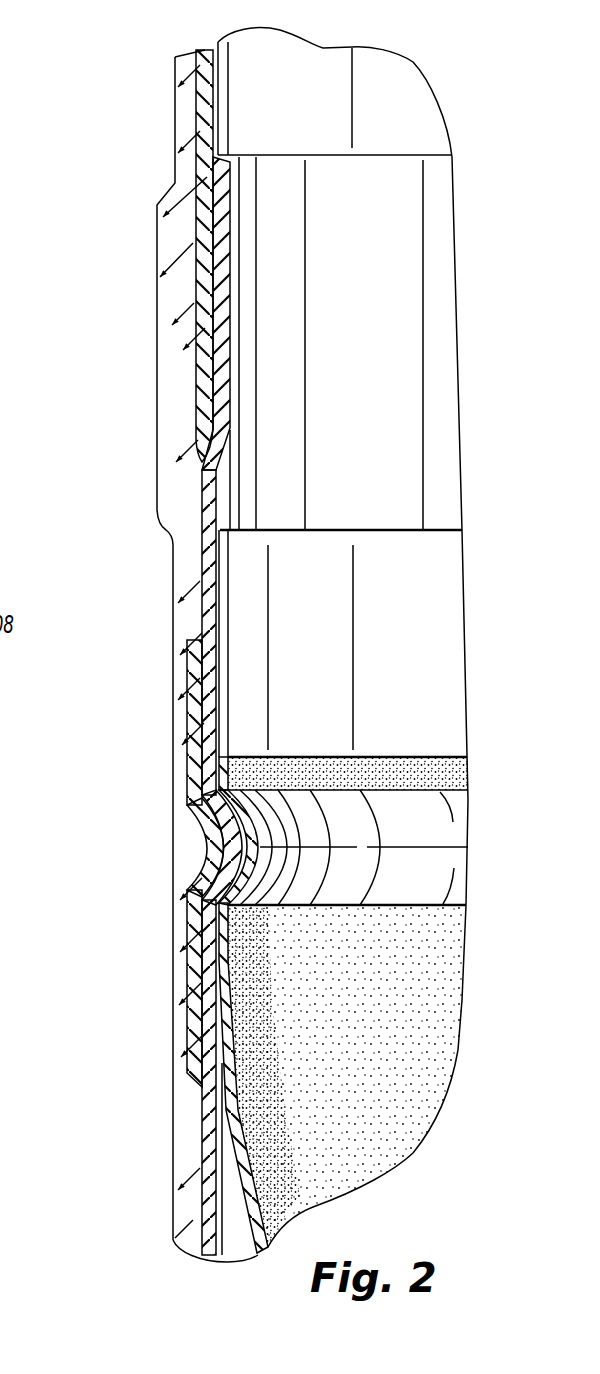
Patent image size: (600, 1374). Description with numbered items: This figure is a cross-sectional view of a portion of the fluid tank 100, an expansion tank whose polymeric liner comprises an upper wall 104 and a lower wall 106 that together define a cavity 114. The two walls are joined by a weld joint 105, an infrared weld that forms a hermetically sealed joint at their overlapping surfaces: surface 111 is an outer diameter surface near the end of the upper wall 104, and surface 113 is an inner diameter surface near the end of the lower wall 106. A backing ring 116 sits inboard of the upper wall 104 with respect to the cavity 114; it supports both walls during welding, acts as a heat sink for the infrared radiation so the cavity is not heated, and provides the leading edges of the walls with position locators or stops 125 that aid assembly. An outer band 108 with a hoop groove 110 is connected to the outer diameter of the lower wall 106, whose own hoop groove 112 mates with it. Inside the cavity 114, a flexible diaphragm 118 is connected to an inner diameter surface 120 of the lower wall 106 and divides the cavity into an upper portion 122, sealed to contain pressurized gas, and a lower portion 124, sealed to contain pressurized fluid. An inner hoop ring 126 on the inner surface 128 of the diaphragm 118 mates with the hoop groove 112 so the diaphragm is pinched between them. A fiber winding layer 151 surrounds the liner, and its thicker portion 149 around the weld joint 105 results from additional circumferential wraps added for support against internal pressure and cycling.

The fluid tank 100 is at (65, 167).
The upper wall 104 is at (207, 110).
The weld joint 105 is at (185, 350).
The lower wall 106 is at (210, 1135).
The outer band 108 is at (190, 712).
The hoop groove 110 is at (207, 860).
The surface 111 is at (200, 392).
The hoop groove 112 is at (266, 808).
The surface 113 is at (230, 400).
The cavity 114 is at (438, 295).
The backing ring 116 is at (308, 152).
The flexible diaphragm 118 is at (367, 1044).
The inner diameter surface 120 is at (400, 636).
The upper portion 122 is at (403, 83).
The lower portion 124 is at (232, 1214).
The position locators or stops 125 is at (213, 458).
The inner hoop ring 126 is at (423, 820).
The inner surface 128 is at (409, 1112).
The thicker portion 149 is at (155, 240).
The fiber winding layer 151 is at (182, 968).